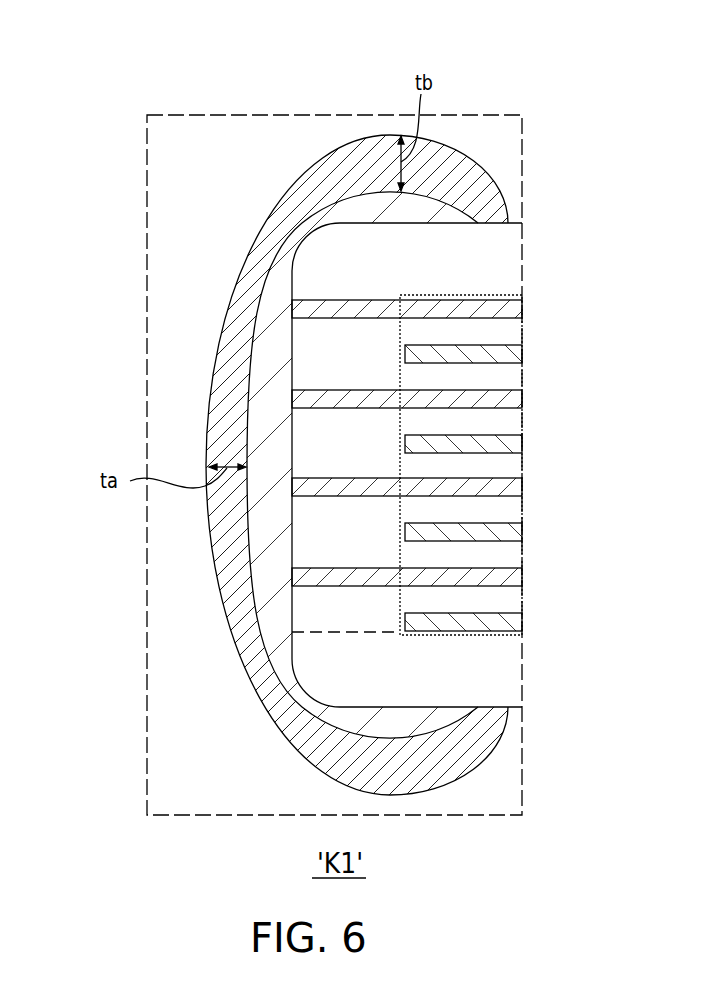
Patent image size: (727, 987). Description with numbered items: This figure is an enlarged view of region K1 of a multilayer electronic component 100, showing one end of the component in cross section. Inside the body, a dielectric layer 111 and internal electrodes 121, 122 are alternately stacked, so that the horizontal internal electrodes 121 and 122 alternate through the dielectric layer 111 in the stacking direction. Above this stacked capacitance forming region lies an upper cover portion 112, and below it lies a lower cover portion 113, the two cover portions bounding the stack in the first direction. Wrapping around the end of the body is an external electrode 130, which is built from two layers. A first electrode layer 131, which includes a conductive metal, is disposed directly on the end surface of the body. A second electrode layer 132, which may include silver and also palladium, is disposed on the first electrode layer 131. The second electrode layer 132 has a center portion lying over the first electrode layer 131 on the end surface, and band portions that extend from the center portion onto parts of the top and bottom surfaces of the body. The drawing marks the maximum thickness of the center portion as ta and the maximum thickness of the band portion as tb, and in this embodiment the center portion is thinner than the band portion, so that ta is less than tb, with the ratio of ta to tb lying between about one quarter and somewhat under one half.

The multilayer electronic component 100 is at (297, 39).
The dielectric layer 111 is at (508, 334).
The upper cover portion 112 is at (508, 261).
The lower cover portion 113 is at (507, 673).
The internal electrode 121 is at (505, 318).
The internal electrode 122 is at (510, 357).
The external electrode 130 is at (363, 465).
The first electrode layer 131 is at (258, 394).
The second electrode layer 132 is at (208, 431).